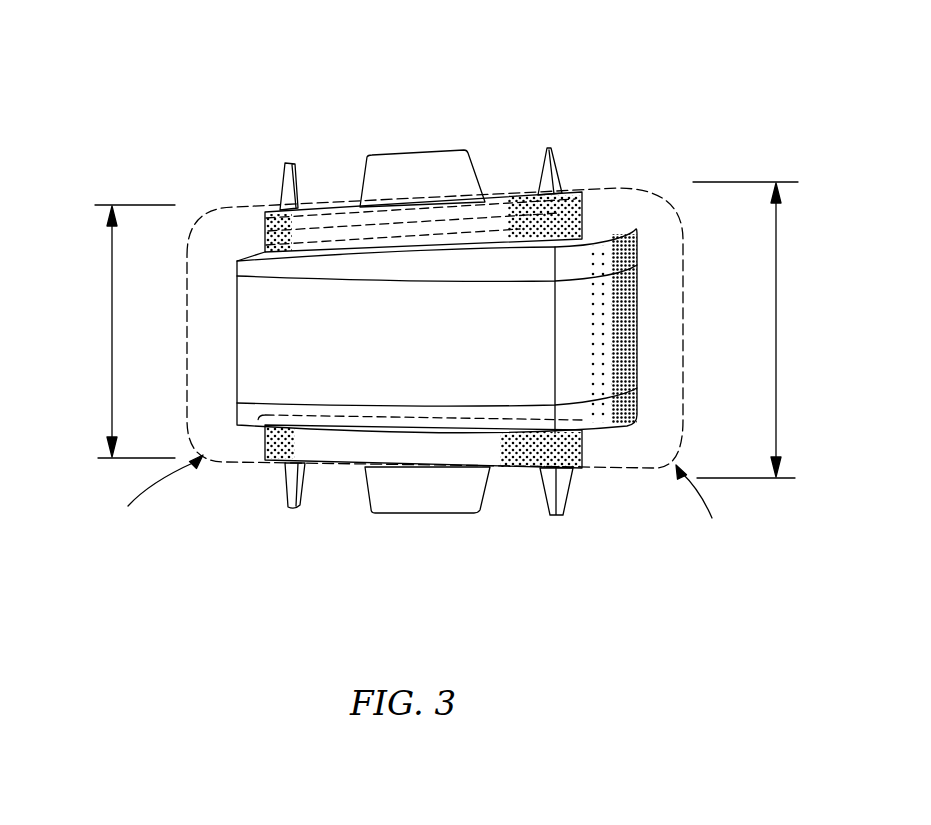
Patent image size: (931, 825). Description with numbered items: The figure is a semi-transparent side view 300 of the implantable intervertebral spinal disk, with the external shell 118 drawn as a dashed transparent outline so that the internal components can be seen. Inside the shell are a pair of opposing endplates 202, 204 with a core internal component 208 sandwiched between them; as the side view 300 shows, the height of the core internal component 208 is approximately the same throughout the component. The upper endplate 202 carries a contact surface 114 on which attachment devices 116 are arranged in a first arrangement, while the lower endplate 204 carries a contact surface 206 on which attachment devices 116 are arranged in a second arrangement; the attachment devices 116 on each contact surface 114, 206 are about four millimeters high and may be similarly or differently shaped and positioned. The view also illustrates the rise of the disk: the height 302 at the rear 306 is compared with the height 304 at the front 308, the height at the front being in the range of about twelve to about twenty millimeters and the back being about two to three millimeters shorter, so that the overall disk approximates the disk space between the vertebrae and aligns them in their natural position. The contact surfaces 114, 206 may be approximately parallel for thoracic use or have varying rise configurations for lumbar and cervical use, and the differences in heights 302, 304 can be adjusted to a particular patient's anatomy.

The side view 300 is at (552, 52).
The contact surface 114 is at (573, 187).
The attachment devices 116 is at (438, 172).
The external shell 118 is at (237, 202).
The endplate 202 is at (627, 255).
The endplate 204 is at (627, 408).
The contact surface 206 is at (573, 470).
The core internal component 208 is at (238, 328).
The height 302 is at (112, 332).
The height 304 is at (776, 333).
The rear 306 is at (159, 496).
The front 308 is at (710, 509).